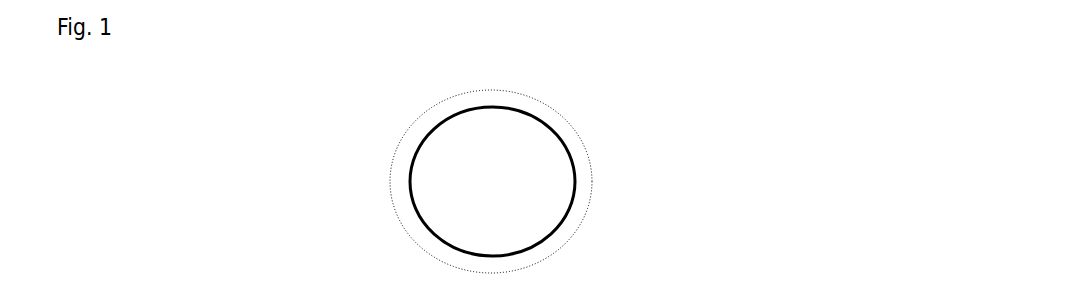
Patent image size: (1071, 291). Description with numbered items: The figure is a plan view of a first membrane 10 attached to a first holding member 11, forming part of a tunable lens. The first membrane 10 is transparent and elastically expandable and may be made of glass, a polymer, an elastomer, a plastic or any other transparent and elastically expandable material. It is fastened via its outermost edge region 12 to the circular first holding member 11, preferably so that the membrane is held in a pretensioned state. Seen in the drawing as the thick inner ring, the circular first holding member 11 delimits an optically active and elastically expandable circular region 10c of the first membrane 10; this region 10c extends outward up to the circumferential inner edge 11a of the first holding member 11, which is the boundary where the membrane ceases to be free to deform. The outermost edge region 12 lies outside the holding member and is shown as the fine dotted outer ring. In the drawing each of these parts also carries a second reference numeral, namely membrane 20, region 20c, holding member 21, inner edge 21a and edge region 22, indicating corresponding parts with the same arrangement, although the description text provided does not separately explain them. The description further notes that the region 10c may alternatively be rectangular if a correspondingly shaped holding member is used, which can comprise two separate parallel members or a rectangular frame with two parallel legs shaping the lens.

The first membrane 10 is at (554, 173).
The cable 20 is at (554, 173).
The circular region 10c is at (432, 155).
The core portion 20c is at (448, 152).
The first holding member 11 is at (581, 181).
The inner layer 21 is at (581, 204).
The circumferential inner edge 11a is at (493, 182).
The inner surface 21a is at (527, 250).
The outermost edge region 12 is at (561, 181).
The outer sheath 22 is at (563, 225).